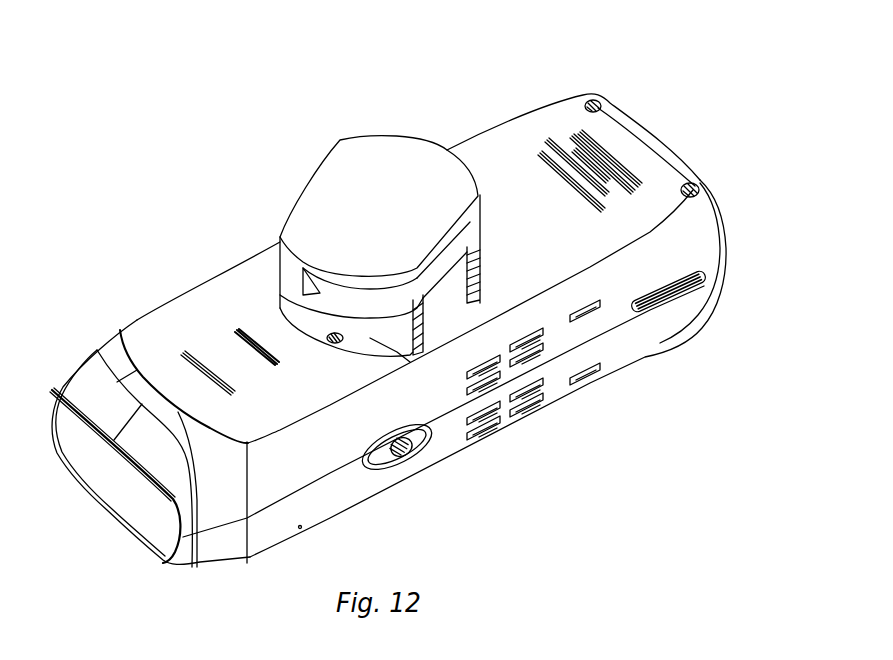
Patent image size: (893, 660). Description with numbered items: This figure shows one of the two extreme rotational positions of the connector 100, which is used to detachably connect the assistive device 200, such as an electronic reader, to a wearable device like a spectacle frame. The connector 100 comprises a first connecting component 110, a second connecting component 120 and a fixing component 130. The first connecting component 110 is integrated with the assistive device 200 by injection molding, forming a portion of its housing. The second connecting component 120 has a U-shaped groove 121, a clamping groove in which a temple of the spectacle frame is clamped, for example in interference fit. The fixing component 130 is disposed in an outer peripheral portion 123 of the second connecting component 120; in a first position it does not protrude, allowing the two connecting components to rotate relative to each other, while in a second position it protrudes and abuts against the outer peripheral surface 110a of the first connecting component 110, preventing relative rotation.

The connector 100 is at (317, 144).
The first connecting component 110 is at (443, 308).
The outer peripheral surface 110a is at (470, 280).
The second connecting component 120 is at (320, 227).
The U-shaped groove 121 is at (280, 297).
The outer peripheral portion 123 is at (373, 337).
The fixing component 130 is at (320, 347).
The assistive device 200 is at (605, 311).